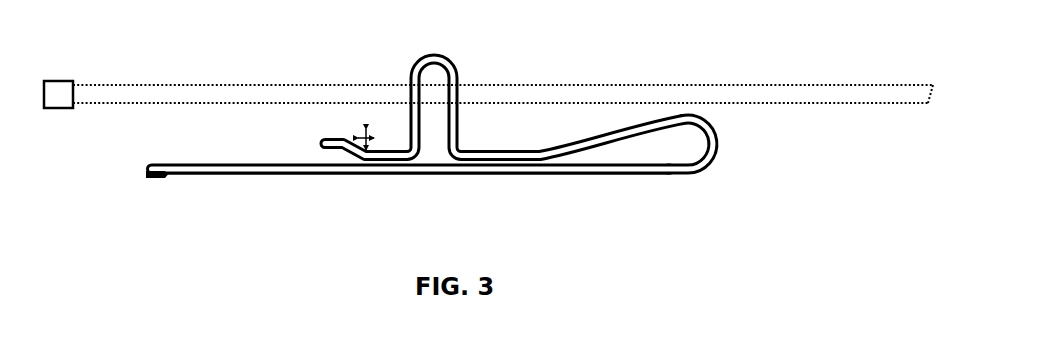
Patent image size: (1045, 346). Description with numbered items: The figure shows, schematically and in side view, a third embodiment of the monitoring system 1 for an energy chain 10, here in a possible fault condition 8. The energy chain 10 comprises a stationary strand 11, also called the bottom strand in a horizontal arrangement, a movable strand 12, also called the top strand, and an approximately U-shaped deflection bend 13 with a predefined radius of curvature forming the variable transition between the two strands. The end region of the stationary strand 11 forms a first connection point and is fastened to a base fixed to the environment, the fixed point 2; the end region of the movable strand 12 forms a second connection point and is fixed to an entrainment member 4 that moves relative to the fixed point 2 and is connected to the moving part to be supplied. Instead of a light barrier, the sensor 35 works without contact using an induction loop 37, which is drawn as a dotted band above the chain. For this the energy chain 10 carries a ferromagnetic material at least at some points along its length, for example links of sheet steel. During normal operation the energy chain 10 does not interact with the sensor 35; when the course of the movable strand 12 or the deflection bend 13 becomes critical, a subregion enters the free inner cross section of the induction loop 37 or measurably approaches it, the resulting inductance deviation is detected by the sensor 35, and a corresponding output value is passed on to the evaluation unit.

The monitoring system 1 is at (488, 123).
The fixed point 2 is at (154, 177).
The entrainment member 4 is at (355, 121).
The fault condition 8 is at (455, 73).
The energy chain 10 is at (200, 165).
The stationary strand 11 is at (338, 177).
The moveable strand 12 is at (540, 149).
The deflection bend 13 is at (718, 158).
The sensor 35 is at (60, 92).
The induction loop 37 is at (703, 86).